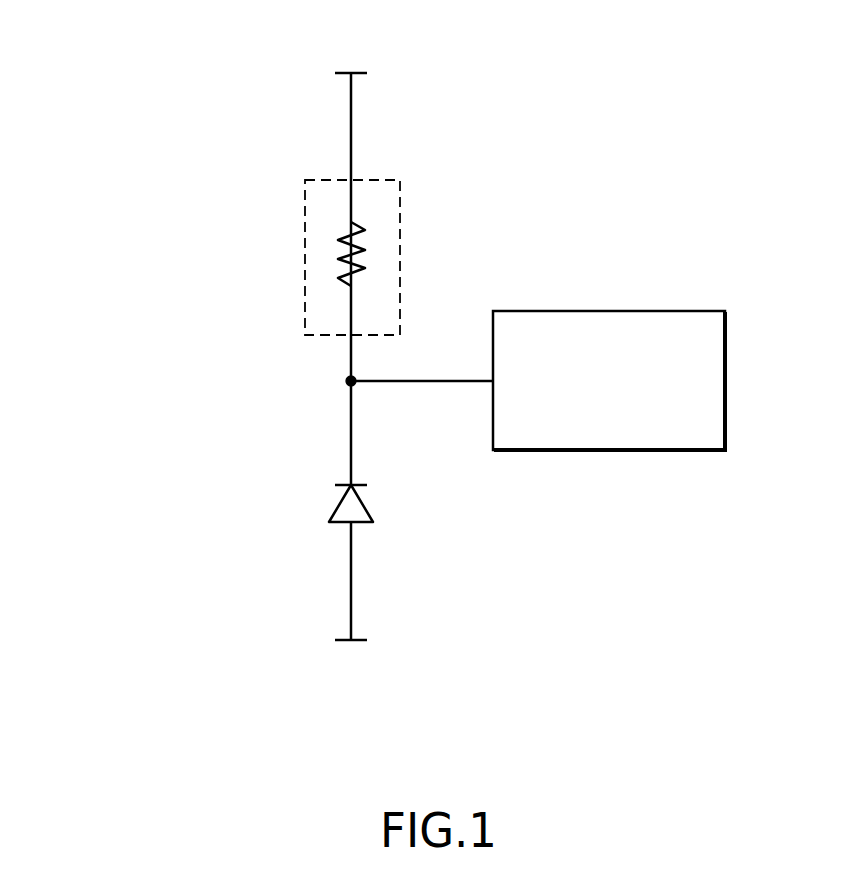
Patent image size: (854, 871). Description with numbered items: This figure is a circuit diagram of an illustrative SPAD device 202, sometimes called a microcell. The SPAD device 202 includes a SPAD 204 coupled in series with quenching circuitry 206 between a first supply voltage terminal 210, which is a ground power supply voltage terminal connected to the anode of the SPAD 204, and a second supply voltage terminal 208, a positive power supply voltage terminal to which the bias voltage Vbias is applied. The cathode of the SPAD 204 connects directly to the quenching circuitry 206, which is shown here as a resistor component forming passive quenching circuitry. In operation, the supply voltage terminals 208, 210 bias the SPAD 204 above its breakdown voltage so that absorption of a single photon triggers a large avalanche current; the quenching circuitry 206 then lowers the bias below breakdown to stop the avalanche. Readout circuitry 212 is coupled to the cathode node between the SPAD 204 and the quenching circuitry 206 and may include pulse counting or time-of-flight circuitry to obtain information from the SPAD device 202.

The SPAD device 202 is at (187, 153).
The SPAD 204 is at (307, 506).
The quenching circuitry 206 is at (306, 257).
The second supply voltage terminal 208 is at (358, 73).
The first supply voltage terminal 210 is at (345, 643).
The readout circuitry 212 is at (641, 311).